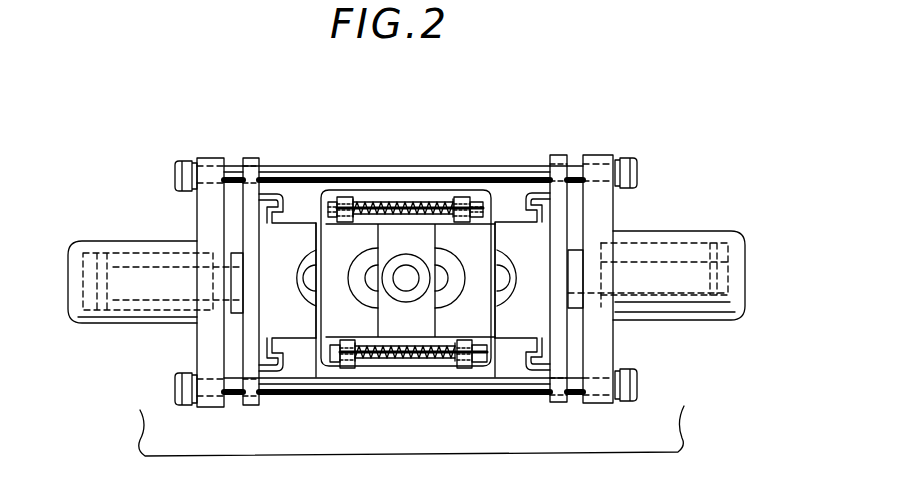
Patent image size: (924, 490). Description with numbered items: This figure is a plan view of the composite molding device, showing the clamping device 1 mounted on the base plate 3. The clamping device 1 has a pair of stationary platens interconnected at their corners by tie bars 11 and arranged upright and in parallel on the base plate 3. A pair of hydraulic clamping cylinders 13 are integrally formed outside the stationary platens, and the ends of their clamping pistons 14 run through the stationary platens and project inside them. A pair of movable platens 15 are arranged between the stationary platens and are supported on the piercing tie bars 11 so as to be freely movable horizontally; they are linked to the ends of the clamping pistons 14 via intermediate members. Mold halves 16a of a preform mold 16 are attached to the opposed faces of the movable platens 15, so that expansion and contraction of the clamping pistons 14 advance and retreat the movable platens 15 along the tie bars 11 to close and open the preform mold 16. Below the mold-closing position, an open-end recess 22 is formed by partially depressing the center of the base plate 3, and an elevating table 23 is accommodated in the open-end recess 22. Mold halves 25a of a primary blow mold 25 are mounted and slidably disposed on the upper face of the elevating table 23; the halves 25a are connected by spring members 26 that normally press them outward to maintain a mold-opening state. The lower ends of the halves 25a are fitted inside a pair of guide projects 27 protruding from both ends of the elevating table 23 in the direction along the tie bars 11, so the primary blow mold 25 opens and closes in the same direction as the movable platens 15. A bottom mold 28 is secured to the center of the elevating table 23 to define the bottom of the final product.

The clamping device 1 is at (210, 154).
The base plate 3 is at (652, 448).
The tie bars 11 is at (282, 170).
The hydraulic clamping cylinders 13 is at (95, 325).
The clamping pistons 14 is at (137, 287).
The movable platens 15 is at (250, 216).
The preform mold 16 is at (300, 216).
The preform mold halves 16a is at (297, 322).
The open-end recess 22 is at (410, 370).
The elevating table 23 is at (423, 313).
The primary blow mold 25 is at (470, 177).
The primary blow mold halves 25a is at (352, 237).
The spring members 26 is at (433, 247).
The guide projects 27 is at (377, 247).
The bottom mold 28 is at (398, 247).